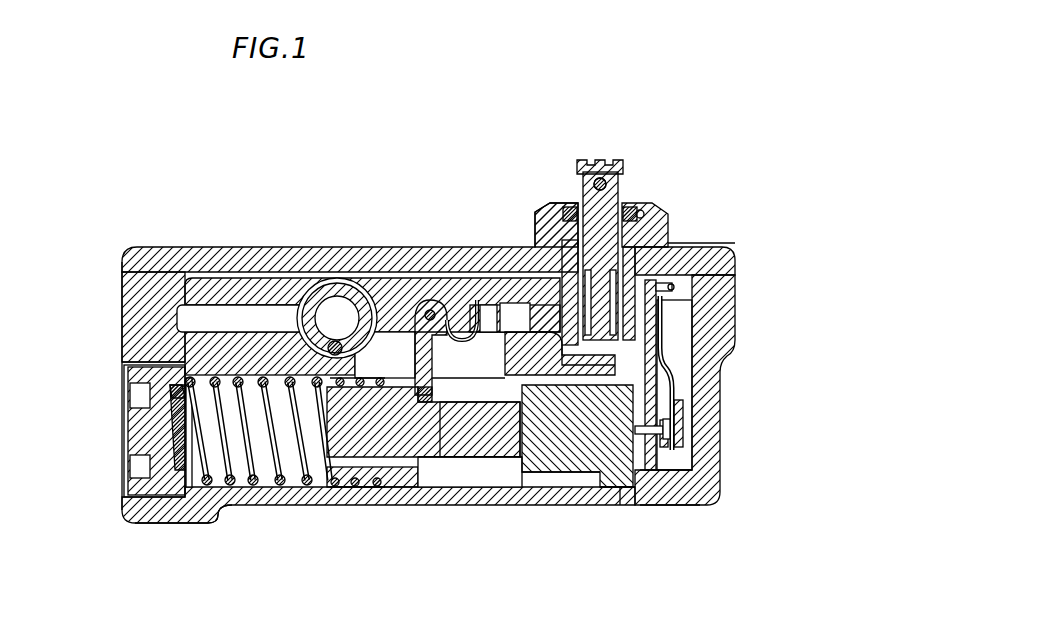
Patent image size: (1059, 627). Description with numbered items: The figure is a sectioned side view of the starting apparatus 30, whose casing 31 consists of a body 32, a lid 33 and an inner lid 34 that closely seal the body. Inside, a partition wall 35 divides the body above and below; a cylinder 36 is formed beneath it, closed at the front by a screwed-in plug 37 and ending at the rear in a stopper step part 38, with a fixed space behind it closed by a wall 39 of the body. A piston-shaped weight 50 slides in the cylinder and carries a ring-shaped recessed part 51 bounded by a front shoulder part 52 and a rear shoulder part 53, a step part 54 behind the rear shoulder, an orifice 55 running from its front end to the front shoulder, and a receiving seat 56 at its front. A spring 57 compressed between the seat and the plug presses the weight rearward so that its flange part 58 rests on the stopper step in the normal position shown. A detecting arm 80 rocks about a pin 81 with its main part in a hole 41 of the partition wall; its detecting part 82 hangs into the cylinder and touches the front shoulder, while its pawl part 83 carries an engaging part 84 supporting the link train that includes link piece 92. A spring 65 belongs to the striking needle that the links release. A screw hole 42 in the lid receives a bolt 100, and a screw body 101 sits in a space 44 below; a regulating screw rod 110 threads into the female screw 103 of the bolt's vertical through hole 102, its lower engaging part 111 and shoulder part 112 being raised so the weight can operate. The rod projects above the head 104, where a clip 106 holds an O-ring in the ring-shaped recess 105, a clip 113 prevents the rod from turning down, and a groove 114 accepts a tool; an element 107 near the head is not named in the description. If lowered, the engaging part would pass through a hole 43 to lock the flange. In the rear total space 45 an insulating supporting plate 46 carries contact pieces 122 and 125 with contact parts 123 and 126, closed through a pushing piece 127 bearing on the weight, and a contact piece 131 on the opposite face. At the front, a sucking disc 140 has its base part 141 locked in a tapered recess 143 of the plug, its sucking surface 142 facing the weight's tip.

The starting apparatus 30 is at (120, 318).
The casing 31 is at (121, 282).
The body 32 is at (152, 524).
The lid 33 is at (213, 262).
The inner lid 34 is at (200, 288).
The partition wall 35 is at (235, 360).
The cylinder 36 is at (326, 487).
The plug 37 is at (160, 425).
The stopper step part 38 is at (652, 470).
The wall 39 is at (705, 400).
The hole 41 is at (357, 367).
The screw hole 42 is at (672, 262).
The hole 43 is at (587, 349).
The space 44 is at (598, 360).
The total space 45 is at (676, 381).
The insulating supporting plate 46 is at (700, 480).
The piston-shaped weight 50 is at (466, 444).
The recessed part 51 is at (440, 462).
The front shoulder part 52 is at (423, 422).
The rear shoulder part 53 is at (480, 429).
The step part 54 is at (533, 388).
The orifice 55 is at (366, 487).
The receiving seat 56 is at (385, 490).
The spring 57 is at (215, 495).
The flange part 58 is at (612, 487).
The spring 65 is at (325, 298).
The detecting arm 80 is at (415, 305).
The pin 81 is at (440, 300).
The detecting part 82 is at (420, 395).
The pawl part 83 is at (470, 300).
The engaging part 84 is at (492, 310).
The link piece 92 is at (490, 300).
The bolt 100 is at (632, 284).
The screw body 101 is at (570, 280).
The vertical through hole 102 is at (552, 222).
The female screw 103 is at (670, 290).
The head 104 is at (565, 208).
The ring-shaped recess 105 is at (655, 228).
The clip 106 is at (578, 160).
The seal 107 is at (643, 211).
The regulating screw rod 110 is at (692, 233).
The engaging part 111 is at (560, 353).
The shoulder part 112 is at (548, 288).
The clip 113 is at (608, 183).
The groove 114 is at (620, 178).
The contact piece 122 is at (683, 405).
The contact part 123 is at (668, 428).
The contact piece 125 is at (656, 328).
The contact part 126 is at (660, 436).
The pushing piece 127 is at (626, 500).
The contact piece 131 is at (667, 345).
The sucking disc 140 is at (232, 476).
The base part 141 is at (172, 445).
The sucking surface 142 is at (195, 425).
The tapered recess 143 is at (170, 395).